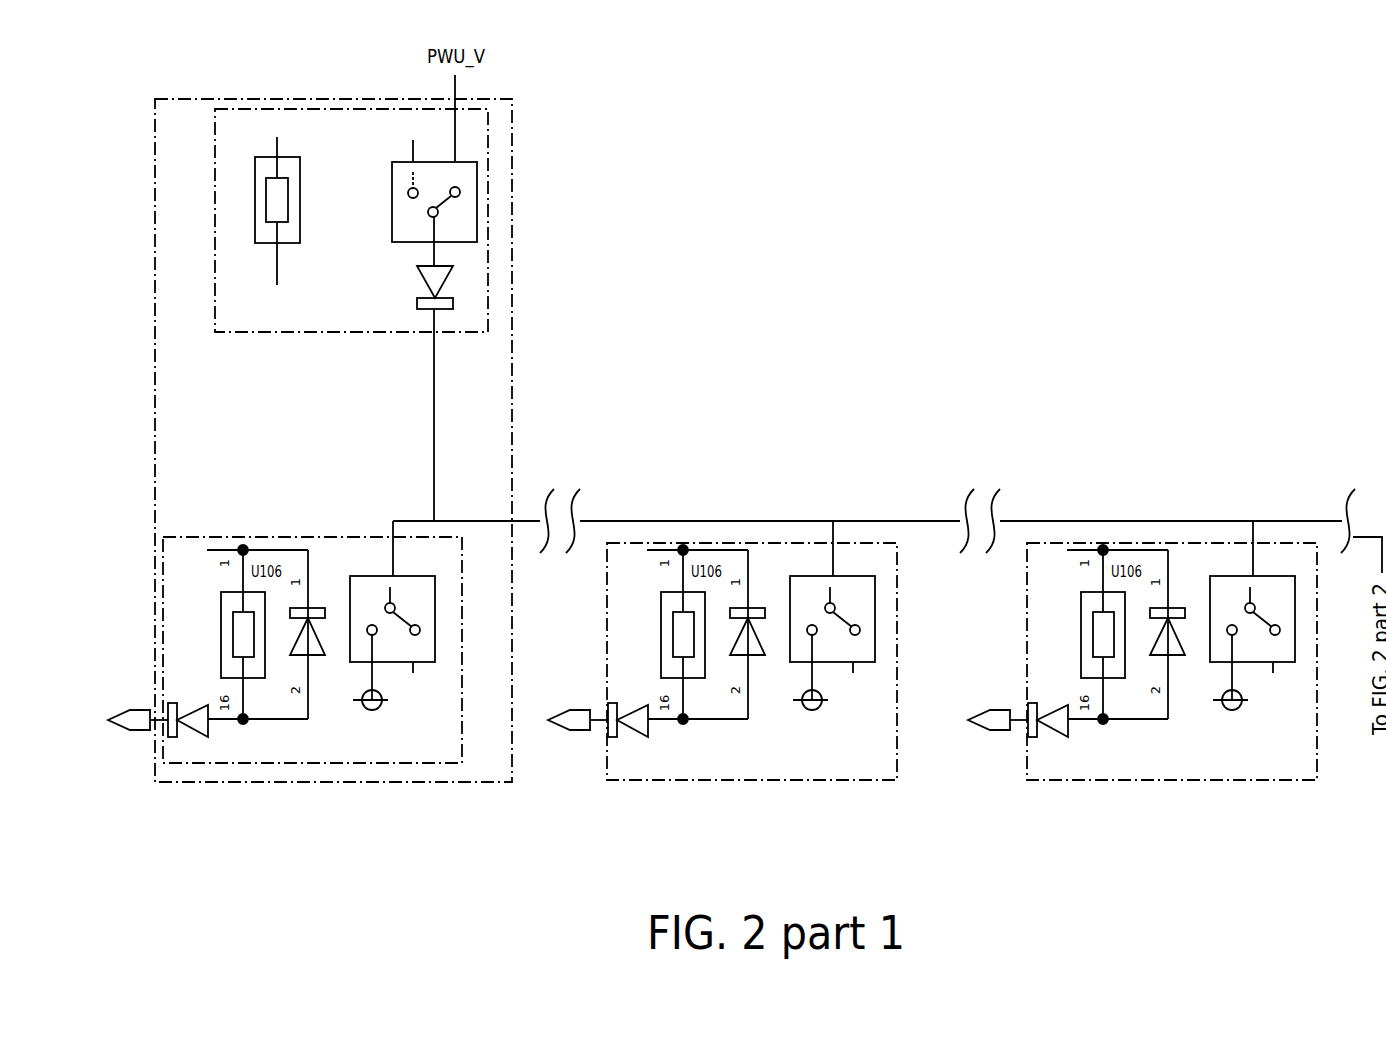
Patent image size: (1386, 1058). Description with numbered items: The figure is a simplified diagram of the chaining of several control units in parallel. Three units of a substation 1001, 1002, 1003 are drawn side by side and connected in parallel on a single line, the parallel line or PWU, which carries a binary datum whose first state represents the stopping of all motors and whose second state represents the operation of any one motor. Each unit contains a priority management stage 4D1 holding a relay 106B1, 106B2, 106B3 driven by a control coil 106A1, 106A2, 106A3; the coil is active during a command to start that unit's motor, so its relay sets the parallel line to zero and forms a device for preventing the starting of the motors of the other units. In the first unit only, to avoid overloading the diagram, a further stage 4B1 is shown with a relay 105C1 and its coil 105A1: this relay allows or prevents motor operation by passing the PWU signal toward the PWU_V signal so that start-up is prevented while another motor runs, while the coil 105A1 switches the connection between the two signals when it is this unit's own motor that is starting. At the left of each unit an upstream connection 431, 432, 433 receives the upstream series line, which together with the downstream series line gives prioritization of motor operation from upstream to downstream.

The unit of the substation 1001 is at (308, 783).
The unit of the substation 1002 is at (753, 780).
The unit of the substation 1003 is at (1172, 780).
The stage 4B1 is at (215, 260).
The priority management stage 4D1 is at (163, 608).
The coil 105A1 is at (255, 193).
The relay 105C1 is at (477, 202).
The control coil 106A1 is at (221, 607).
The relay 106B1 is at (372, 576).
The control coil 106A2 is at (661, 607).
The relay 106B2 is at (812, 576).
The control coil 106A3 is at (1081, 607).
The relay 106B3 is at (1232, 576).
The upstream connection 431 is at (135, 720).
The upstream connection 432 is at (575, 722).
The upstream connection 433 is at (995, 722).